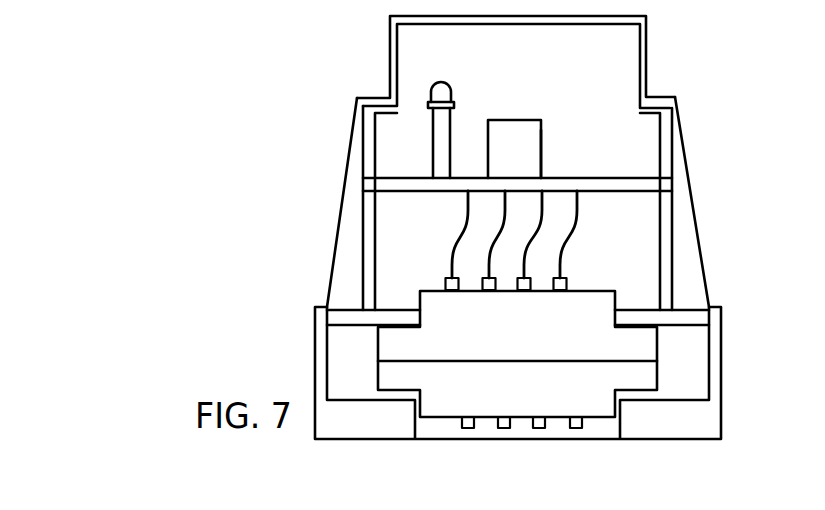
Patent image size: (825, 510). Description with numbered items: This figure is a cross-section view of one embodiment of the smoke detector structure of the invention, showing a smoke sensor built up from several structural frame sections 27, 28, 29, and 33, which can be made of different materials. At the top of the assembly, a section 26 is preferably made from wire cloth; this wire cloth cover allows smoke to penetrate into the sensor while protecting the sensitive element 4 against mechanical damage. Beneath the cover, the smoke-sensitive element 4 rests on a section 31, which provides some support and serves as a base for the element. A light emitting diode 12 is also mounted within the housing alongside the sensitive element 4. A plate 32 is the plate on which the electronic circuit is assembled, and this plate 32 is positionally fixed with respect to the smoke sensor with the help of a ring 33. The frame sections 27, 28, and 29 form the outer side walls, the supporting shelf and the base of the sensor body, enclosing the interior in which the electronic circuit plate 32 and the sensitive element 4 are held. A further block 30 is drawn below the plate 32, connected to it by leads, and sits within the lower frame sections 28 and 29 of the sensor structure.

The smoke-sensitive element 4 is at (542, 125).
The light emitting diode 12 is at (455, 105).
The wire cloth section 26 is at (646, 62).
The structural frame section 27 is at (687, 167).
The structural frame section 28 is at (690, 313).
The structural frame section 29 is at (710, 367).
The circuit block 30 is at (583, 302).
The support section 31 is at (542, 168).
The plate 32 is at (584, 178).
The ring 33 is at (365, 203).